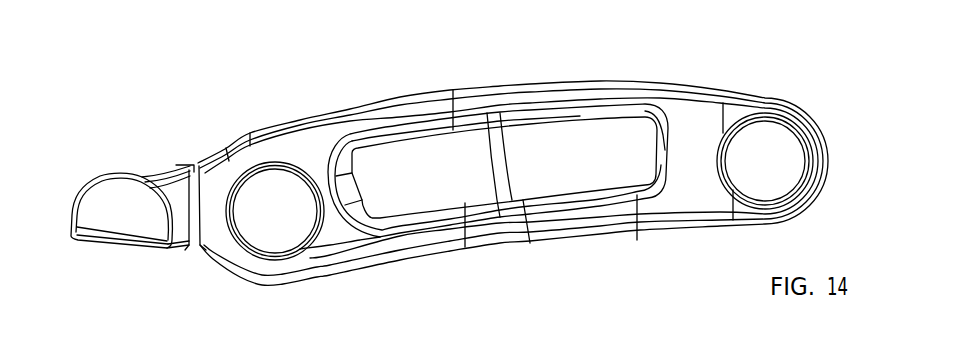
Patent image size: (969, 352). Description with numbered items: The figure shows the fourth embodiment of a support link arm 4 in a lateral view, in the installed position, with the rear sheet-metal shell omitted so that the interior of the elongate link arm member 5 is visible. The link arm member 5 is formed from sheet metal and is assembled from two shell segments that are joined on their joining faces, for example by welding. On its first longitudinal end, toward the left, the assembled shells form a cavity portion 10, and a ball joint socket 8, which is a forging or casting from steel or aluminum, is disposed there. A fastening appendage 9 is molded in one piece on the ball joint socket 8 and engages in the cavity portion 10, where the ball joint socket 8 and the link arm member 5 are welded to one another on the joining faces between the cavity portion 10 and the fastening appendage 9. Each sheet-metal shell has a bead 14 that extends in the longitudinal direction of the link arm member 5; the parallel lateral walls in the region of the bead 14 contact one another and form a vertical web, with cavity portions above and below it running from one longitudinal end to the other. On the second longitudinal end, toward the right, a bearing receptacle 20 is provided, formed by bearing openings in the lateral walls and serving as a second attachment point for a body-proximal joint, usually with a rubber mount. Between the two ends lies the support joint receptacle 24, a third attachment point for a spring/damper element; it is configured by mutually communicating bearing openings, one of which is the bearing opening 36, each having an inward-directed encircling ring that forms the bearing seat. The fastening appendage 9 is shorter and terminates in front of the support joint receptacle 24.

The support link arm 4 is at (240, 84).
The link arm member 5 is at (579, 76).
The ball joint socket 8 is at (96, 200).
The fastening appendage 9 is at (158, 180).
The cavity portion 10 is at (200, 166).
The bead 14 is at (593, 183).
The bearing receptacle 20 is at (801, 126).
The support joint receptacle 24 is at (301, 247).
The bearing opening 36 is at (275, 254).